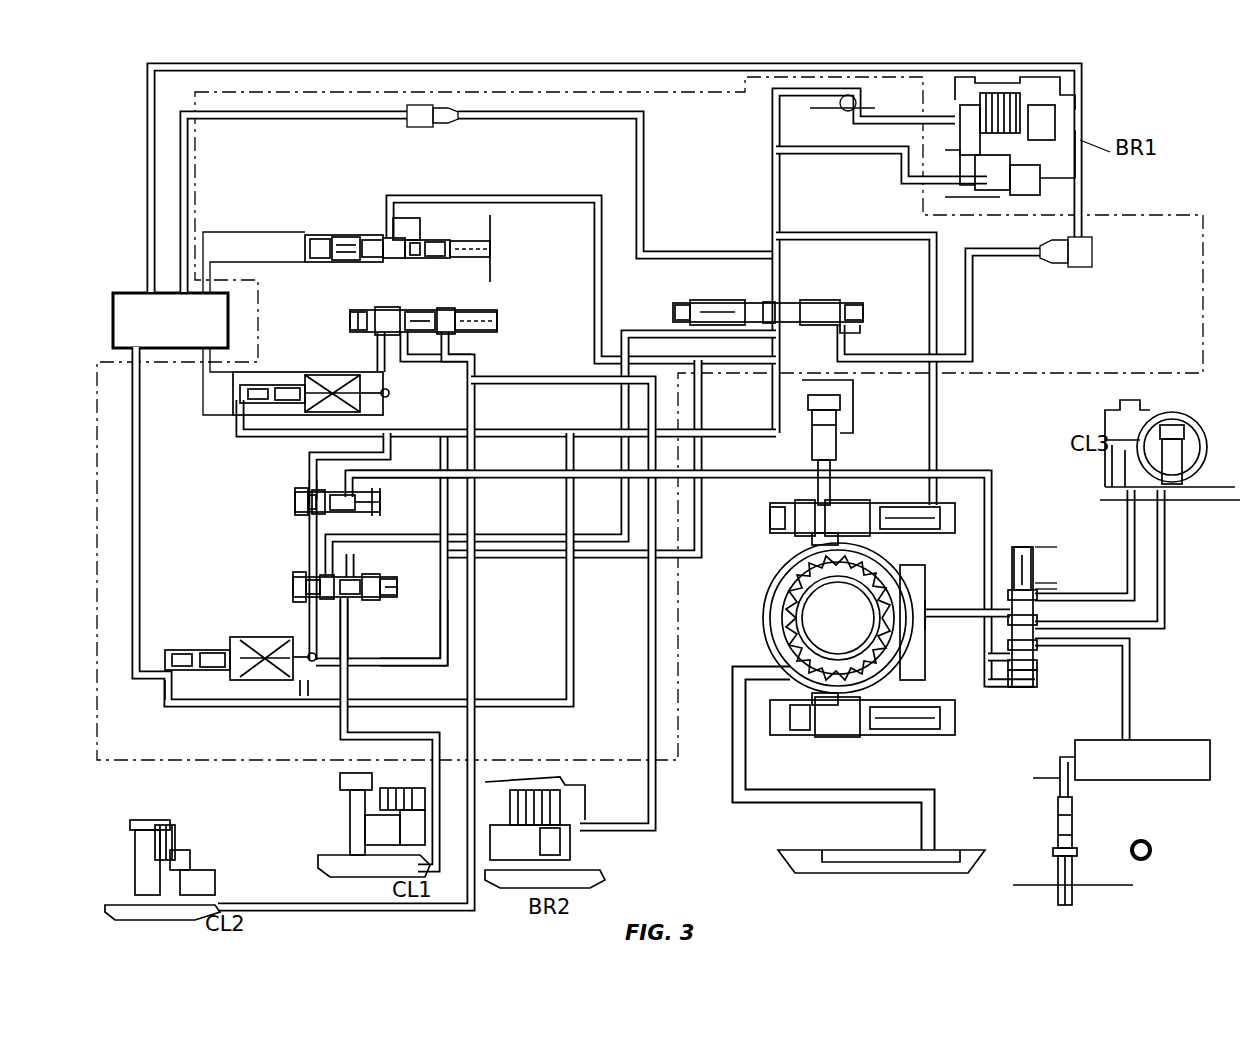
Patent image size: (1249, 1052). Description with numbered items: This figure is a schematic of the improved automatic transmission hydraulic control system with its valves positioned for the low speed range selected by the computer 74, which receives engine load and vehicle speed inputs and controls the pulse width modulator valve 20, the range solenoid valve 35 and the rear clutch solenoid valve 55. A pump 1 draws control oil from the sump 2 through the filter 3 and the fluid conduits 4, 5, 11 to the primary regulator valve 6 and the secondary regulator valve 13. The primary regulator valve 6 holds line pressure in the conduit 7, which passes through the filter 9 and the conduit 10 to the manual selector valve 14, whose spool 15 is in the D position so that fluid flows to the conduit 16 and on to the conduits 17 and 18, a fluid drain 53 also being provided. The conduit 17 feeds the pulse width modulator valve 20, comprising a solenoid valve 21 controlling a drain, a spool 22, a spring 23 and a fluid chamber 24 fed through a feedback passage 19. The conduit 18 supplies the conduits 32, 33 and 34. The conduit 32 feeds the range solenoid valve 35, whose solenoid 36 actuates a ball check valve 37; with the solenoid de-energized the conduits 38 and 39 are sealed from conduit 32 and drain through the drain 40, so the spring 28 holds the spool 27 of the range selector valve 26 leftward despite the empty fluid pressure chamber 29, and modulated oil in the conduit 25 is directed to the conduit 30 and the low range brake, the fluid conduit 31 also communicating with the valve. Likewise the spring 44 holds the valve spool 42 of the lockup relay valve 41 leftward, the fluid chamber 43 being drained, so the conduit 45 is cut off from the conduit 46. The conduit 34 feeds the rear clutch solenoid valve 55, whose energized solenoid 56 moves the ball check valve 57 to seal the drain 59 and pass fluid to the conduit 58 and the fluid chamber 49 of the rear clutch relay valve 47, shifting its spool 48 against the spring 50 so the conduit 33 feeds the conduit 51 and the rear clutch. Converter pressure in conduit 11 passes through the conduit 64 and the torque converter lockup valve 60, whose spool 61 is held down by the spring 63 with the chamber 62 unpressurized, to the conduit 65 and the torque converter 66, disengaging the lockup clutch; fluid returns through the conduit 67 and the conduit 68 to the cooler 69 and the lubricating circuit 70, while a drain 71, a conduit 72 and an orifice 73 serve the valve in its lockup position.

The pump 1 is at (763, 628).
The sump 2 is at (790, 860).
The filter 3 is at (835, 850).
The fluid conduit 4 is at (733, 790).
The fluid conduit 5 is at (775, 575).
The primary regulator valve 6 is at (765, 515).
The conduit 7 is at (835, 500).
The filter 9 is at (808, 440).
The conduit 10 is at (853, 410).
The conduit 11 is at (920, 650).
The secondary regulator valve 13 is at (890, 742).
The manual selector valve 14 is at (800, 300).
The spool 15 is at (705, 302).
The conduit 16 is at (750, 373).
The conduit 17 is at (512, 196).
The conduit 18 is at (703, 458).
The feedback passage 19 is at (388, 232).
The pulse width modulator valve 20 is at (440, 240).
The solenoid valve 21 is at (345, 268).
The spool 22 is at (470, 240).
The spring 23 is at (490, 262).
The fluid chamber 24 is at (400, 262).
The fluid conduit 25 is at (412, 302).
The range selector valve 26 is at (440, 310).
The spool 27 is at (437, 348).
The spring 28 is at (490, 312).
The fluid pressure chamber 29 is at (368, 312).
The fluid conduit 30 is at (515, 380).
The fluid conduit 31 is at (470, 358).
The conduit 32 is at (438, 510).
The conduit 33 is at (424, 556).
The conduit 34 is at (444, 670).
The range solenoid valve 35 is at (325, 370).
The solenoid 36 is at (320, 372).
The ball check valve 37 is at (389, 397).
The fluid conduit 38 is at (375, 345).
The fluid conduit 39 is at (387, 455).
The drain 40 is at (410, 430).
The lockup relay valve 41 is at (340, 495).
The valve spool 42 is at (305, 510).
The fluid chamber 43 is at (293, 485).
The spring 44 is at (380, 492).
The conduit 45 is at (308, 556).
The conduit 46 is at (490, 472).
The rear clutch relay valve 47 is at (364, 585).
The spool 48 is at (365, 600).
The fluid chamber 49 is at (293, 587).
The spring 50 is at (395, 595).
The conduit 51 is at (346, 680).
The fluid drain 53 is at (745, 300).
The rear clutch solenoid valve 55 is at (315, 680).
The solenoid 56 is at (265, 635).
The ball check valve 57 is at (305, 650).
The conduit 58 is at (345, 636).
The drain 59 is at (300, 700).
The torque converter lockup valve 60 is at (1037, 665).
The spool 61 is at (1034, 690).
The chamber 62 is at (1018, 690).
The spring 63 is at (1030, 550).
The conduit 64 is at (950, 612).
The conduit 65 is at (1098, 597).
The torque converter 66 is at (1205, 425).
The conduit 67 is at (1165, 582).
The conduit 68 is at (1135, 700).
The cooler 69 is at (1180, 740).
The lubricating circuit 70 is at (1045, 778).
The drain 71 is at (1058, 585).
The conduit 72 is at (970, 658).
The orifice 73 is at (990, 688).
The computer 74 is at (225, 340).